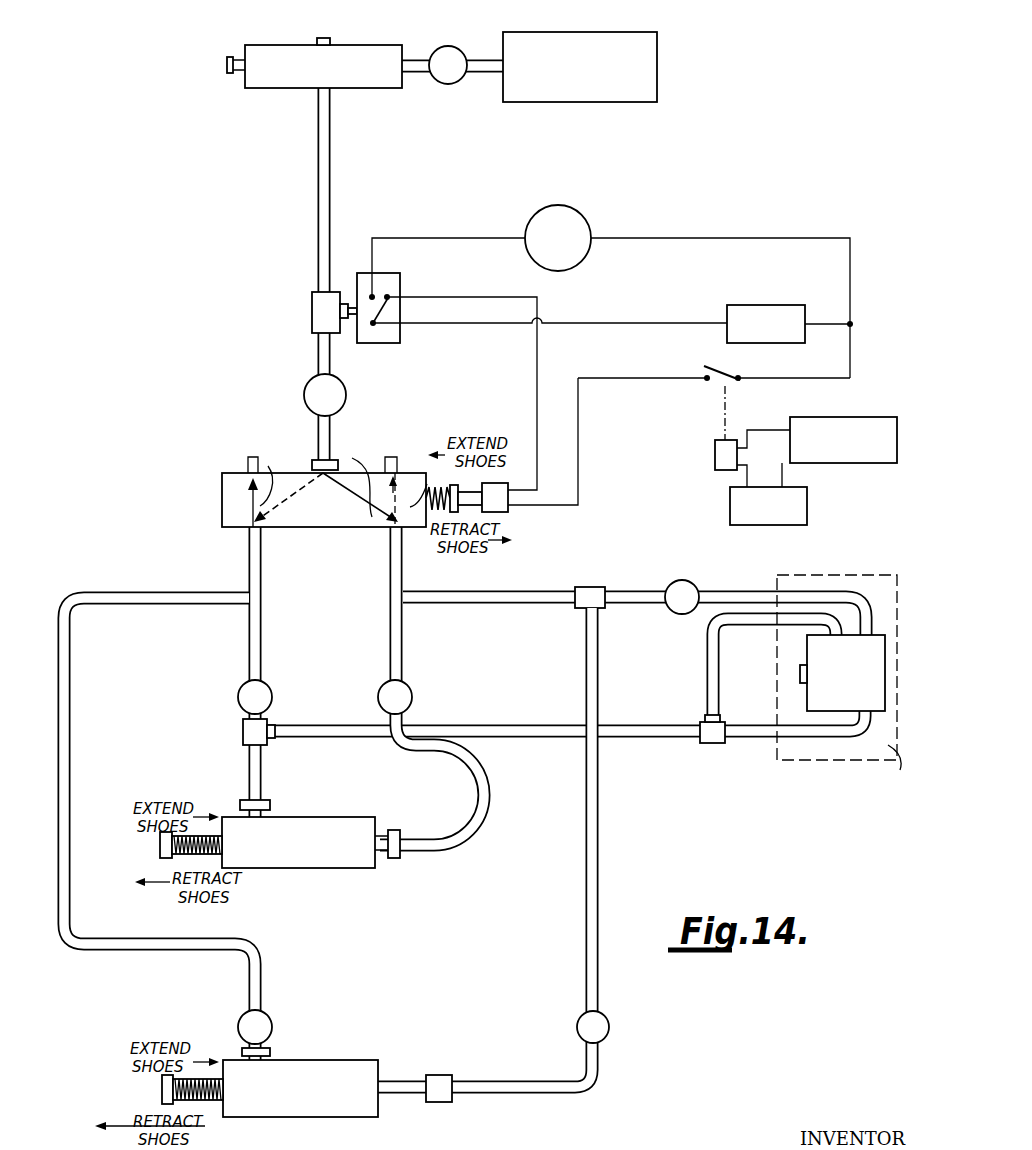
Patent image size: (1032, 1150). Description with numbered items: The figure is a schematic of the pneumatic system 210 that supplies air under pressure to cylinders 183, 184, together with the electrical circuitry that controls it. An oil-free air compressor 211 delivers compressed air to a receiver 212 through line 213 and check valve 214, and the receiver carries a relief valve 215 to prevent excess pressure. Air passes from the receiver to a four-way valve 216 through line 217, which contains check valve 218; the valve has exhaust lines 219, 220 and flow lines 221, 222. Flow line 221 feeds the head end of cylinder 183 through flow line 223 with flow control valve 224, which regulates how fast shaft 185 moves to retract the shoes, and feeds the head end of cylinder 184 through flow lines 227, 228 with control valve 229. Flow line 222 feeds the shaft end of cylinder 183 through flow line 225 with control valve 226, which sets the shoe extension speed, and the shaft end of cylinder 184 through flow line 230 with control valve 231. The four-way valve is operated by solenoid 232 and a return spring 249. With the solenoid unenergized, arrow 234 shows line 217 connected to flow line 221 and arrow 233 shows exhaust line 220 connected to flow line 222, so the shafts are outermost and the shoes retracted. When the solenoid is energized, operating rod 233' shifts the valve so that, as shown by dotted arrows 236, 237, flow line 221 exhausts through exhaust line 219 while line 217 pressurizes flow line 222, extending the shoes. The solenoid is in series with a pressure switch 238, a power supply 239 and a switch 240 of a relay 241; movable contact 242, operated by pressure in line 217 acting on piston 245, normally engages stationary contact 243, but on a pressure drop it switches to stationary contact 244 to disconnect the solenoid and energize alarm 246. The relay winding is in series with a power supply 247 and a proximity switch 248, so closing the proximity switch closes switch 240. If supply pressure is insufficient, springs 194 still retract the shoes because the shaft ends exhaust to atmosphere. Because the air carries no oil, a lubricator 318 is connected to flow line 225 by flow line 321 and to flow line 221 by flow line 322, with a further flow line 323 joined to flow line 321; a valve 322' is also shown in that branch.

The pneumatic system 210 is at (290, 402).
The air compressor 211 is at (657, 80).
The receiver 212 is at (370, 88).
The line 213 is at (428, 58).
The check valve 214 is at (455, 83).
The relief valve 215 is at (231, 58).
The four-way valve 216 is at (228, 495).
The line 217 is at (331, 143).
The check valve 218 is at (346, 398).
The exhaust line 219 is at (396, 462).
The exhaust line 220 is at (247, 463).
The flow line 221 is at (403, 554).
The flow line 222 is at (262, 570).
The flow line 223 is at (480, 768).
The flow control valve 224 is at (412, 684).
The flow line 225 is at (262, 766).
The control valve 226 is at (272, 684).
The flow line 227 is at (524, 590).
The flow line 228 is at (600, 822).
The control valve 229 is at (622, 998).
The flow line 230 is at (74, 690).
The control valve 231 is at (292, 978).
The solenoid 232 is at (522, 513).
The arrow 233 is at (279, 474).
The operating rod 233' is at (525, 525).
The arrow 234 is at (373, 504).
The dotted arrow 236 is at (354, 476).
The dotted arrow 237 is at (298, 490).
The pressure switch 238 is at (404, 285).
The power supply 239 is at (752, 305).
The switch 240 is at (722, 374).
The relay 241 is at (714, 463).
The movable contact 242 is at (392, 308).
The stationary contact 243 is at (387, 296).
The stationary contact 244 is at (372, 296).
The piston 245 is at (372, 326).
The alarm 246 is at (577, 210).
The power supply 247 is at (795, 525).
The proximity switch 248 is at (835, 463).
The return spring 249 is at (412, 497).
The lubricator 318 is at (772, 745).
The flow line 321 is at (722, 744).
The flow line 322 is at (720, 594).
The valve 322' is at (688, 576).
The flow line 323 is at (715, 665).
The cylinder 183 is at (312, 858).
The cylinder 184 is at (297, 1105).
The shaft 185 is at (172, 855).
The spring 194 is at (212, 836).